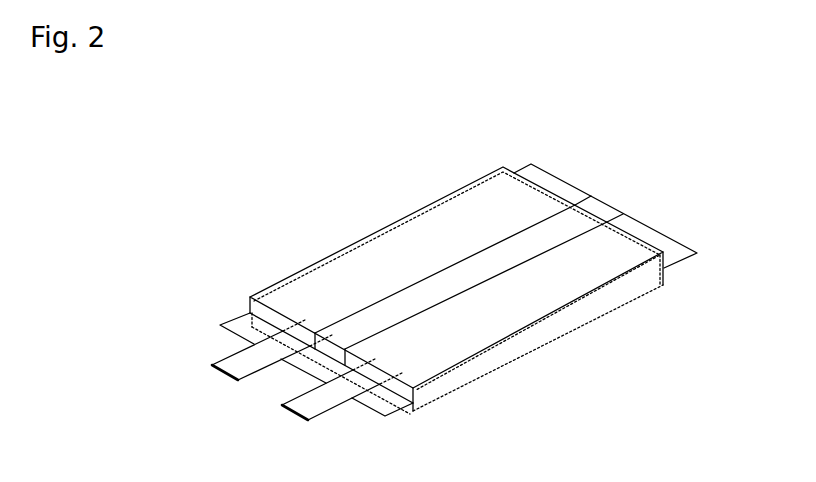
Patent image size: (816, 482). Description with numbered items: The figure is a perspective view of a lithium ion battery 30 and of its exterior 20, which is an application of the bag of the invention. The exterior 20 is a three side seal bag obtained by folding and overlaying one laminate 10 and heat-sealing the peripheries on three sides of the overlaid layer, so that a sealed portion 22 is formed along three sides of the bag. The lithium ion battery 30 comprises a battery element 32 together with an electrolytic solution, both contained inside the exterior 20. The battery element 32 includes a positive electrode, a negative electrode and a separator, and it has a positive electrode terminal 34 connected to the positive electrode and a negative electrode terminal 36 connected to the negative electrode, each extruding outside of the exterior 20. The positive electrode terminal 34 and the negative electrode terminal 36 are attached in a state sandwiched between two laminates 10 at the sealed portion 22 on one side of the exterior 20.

The lithium ion battery 30 is at (538, 120).
The exterior 20 is at (367, 238).
The laminate 10 is at (501, 200).
The battery element 32 is at (460, 220).
The sealed portion 22 is at (536, 230).
The positive electrode terminal 34 is at (233, 363).
The negative electrode terminal 36 is at (340, 406).